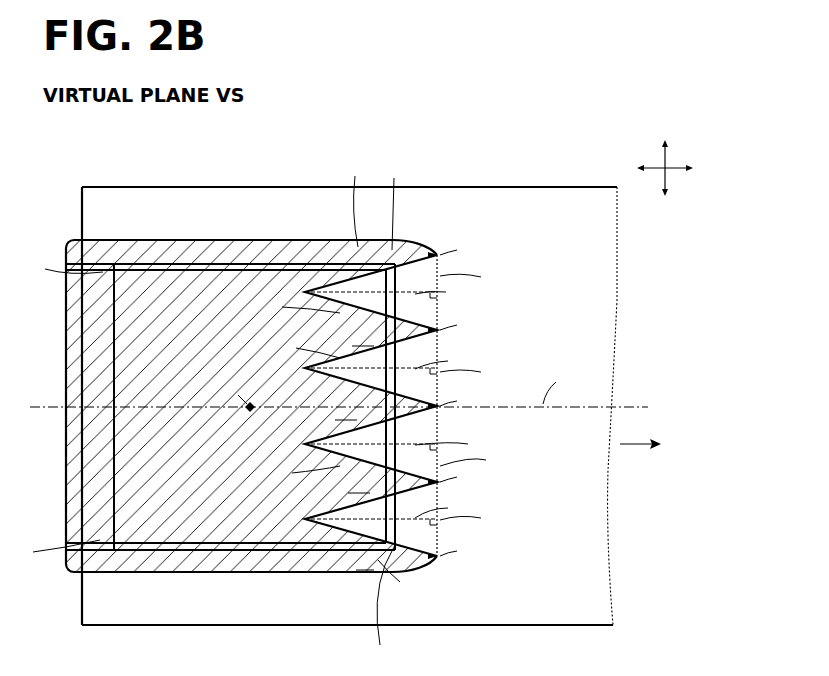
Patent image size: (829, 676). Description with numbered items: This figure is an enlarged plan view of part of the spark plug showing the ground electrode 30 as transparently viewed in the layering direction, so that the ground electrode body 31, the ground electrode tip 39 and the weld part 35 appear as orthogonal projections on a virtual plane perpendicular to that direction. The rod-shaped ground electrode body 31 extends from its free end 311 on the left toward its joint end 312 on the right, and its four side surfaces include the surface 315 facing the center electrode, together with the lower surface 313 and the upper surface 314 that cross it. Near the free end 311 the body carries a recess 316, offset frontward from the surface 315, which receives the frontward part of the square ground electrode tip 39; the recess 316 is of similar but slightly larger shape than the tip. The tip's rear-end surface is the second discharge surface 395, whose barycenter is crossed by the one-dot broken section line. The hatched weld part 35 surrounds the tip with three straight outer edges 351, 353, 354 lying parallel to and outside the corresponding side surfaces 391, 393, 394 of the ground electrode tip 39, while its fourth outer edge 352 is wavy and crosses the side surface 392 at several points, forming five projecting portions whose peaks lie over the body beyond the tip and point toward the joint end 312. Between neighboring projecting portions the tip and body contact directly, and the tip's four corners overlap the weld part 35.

The ground electrode 30 is at (56, 197).
The ground electrode body 31 is at (212, 186).
The free end 311 is at (81, 596).
The joint end 312 is at (704, 459).
The surface 313 is at (342, 626).
The surface 314 is at (316, 186).
The surface 315 is at (497, 212).
The recess 316 is at (300, 262).
The weld part 35 is at (67, 298).
The outer edge 351 is at (67, 505).
The outer edge 352 is at (436, 432).
The outer edge 353 is at (240, 573).
The outer edge 354 is at (212, 239).
The ground electrode tip 39 is at (152, 530).
The side surface 391 is at (112, 425).
The side surface 392 is at (418, 250).
The side surface 393 is at (260, 562).
The side surface 394 is at (233, 262).
The second discharge surface 395 is at (134, 282).